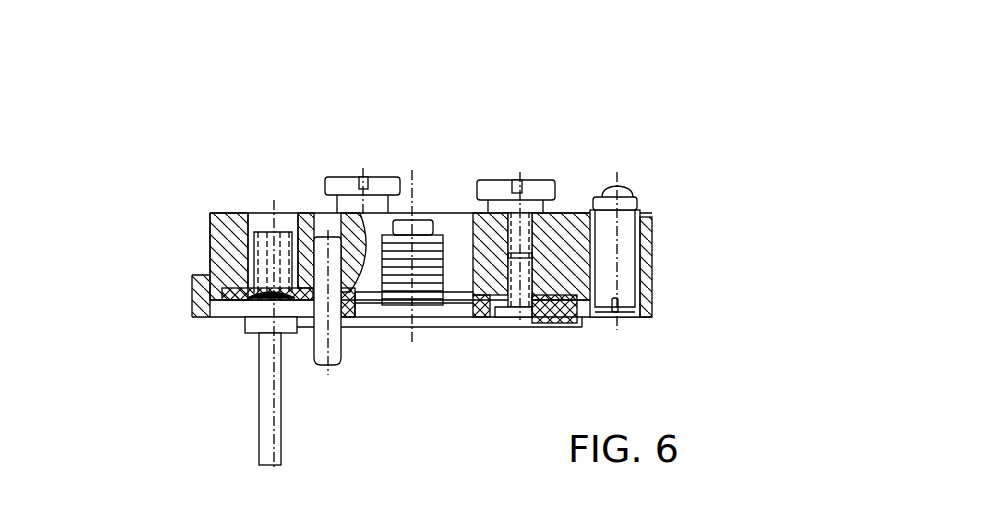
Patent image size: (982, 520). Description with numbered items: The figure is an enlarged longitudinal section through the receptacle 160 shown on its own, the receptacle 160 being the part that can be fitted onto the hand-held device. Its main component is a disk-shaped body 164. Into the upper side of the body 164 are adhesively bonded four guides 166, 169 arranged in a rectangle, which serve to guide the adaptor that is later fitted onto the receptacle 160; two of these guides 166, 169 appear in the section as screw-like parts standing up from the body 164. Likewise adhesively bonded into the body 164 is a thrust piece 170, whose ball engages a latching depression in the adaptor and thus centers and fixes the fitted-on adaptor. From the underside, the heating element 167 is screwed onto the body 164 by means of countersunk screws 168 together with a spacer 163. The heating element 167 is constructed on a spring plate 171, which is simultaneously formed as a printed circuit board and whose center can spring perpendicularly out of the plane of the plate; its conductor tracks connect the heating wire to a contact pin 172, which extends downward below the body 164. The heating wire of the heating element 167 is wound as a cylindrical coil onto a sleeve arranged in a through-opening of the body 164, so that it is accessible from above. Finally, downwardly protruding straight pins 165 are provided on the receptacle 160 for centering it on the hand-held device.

The receptacle 160 is at (693, 272).
The spacer 163 is at (208, 242).
The disk-shaped body 164 is at (220, 222).
The straight pin 165 is at (317, 233).
The guide 166 is at (343, 185).
The heating element 167 is at (420, 222).
The countersunk screw 168 is at (502, 222).
The guide 169 is at (543, 188).
The thrust piece 170 is at (608, 190).
The spring plate 171 is at (552, 313).
The contact pin 172 is at (258, 423).